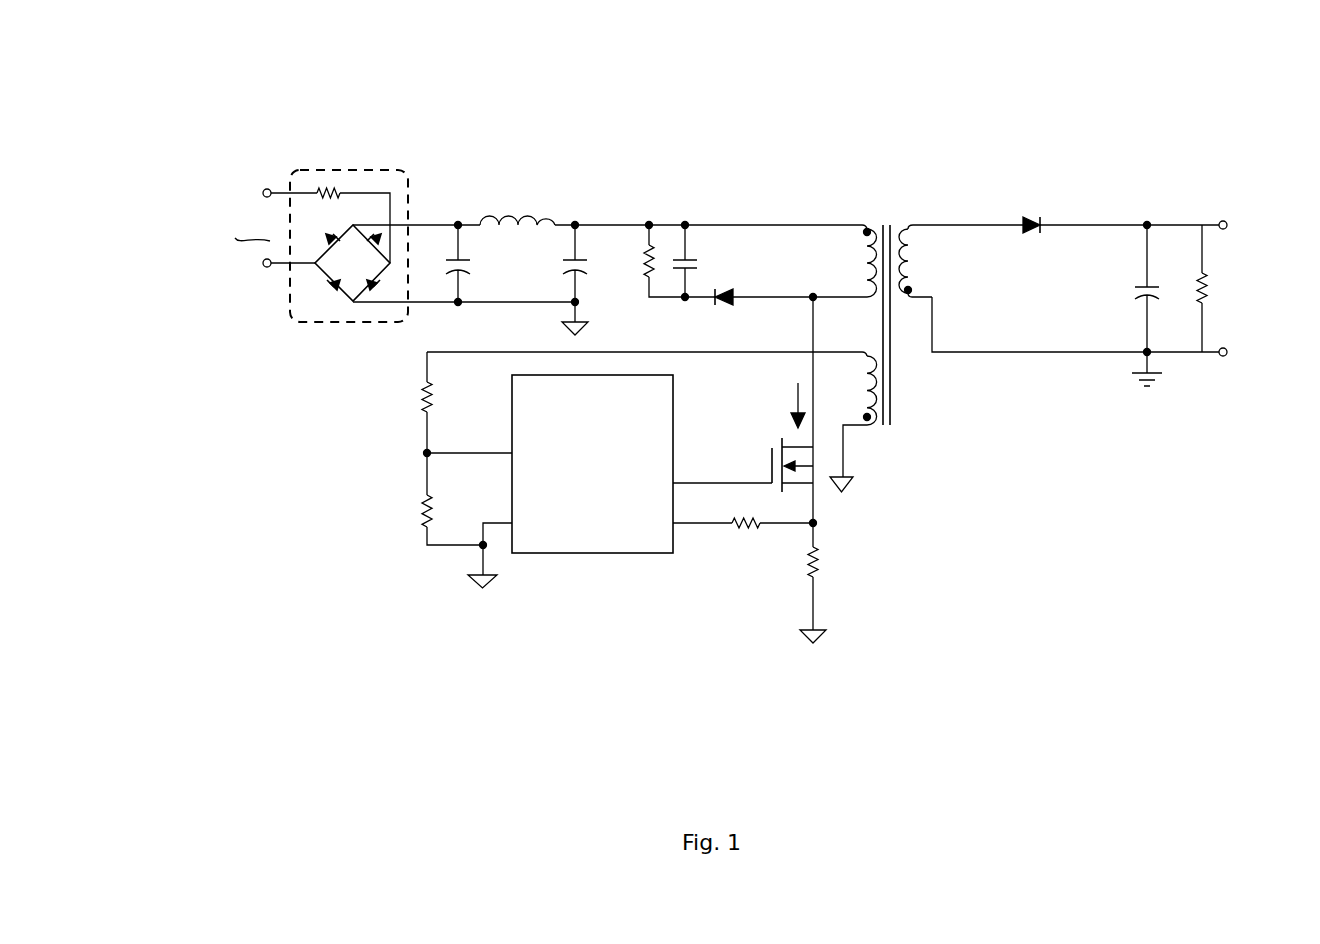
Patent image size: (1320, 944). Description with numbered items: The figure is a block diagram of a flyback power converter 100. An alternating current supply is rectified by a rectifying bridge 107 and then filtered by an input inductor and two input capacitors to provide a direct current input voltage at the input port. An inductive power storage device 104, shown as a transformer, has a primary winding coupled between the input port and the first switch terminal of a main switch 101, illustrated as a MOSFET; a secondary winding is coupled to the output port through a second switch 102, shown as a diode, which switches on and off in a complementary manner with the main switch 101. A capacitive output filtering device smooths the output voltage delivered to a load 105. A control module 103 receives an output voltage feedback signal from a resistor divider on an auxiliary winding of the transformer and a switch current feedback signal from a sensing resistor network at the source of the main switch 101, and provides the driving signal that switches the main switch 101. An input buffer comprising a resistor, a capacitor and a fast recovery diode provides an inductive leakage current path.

The power converter 100 is at (272, 104).
The main switch 101 is at (761, 456).
The second switch 102 is at (1038, 212).
The control module 103 is at (592, 464).
The inductive power storage device 104 is at (884, 211).
The load 105 is at (1215, 290).
The rectifying bridge 107 is at (376, 171).